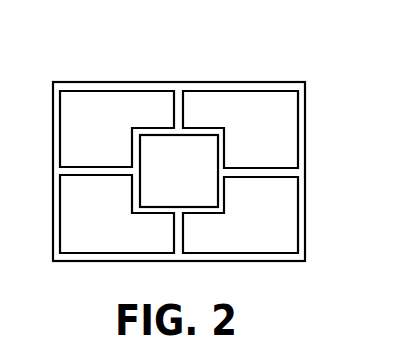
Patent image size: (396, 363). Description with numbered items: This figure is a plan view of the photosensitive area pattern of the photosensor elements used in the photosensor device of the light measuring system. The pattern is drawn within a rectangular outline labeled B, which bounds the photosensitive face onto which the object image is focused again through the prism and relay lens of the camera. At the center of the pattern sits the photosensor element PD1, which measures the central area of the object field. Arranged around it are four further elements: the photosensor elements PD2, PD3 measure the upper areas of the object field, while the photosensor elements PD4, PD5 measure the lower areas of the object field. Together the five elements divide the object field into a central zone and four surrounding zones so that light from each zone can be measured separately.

The photodetector array block B is at (268, 82).
The photosensor element PD1 is at (179, 171).
The photosensor element PD2 is at (240, 129).
The photosensor element PD3 is at (240, 215).
The photosensor element PD4 is at (117, 129).
The photosensor element PD5 is at (117, 214).